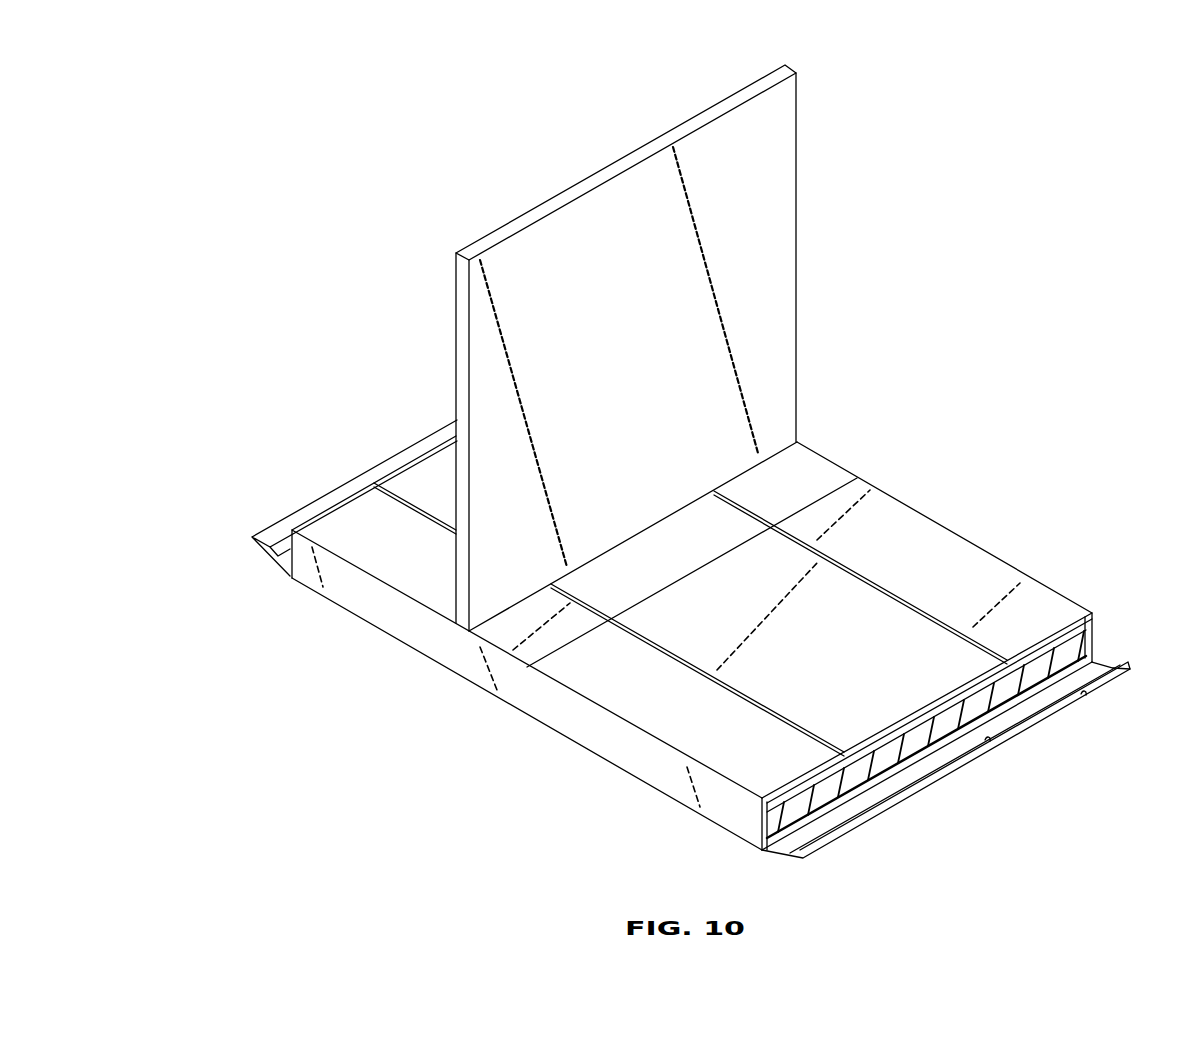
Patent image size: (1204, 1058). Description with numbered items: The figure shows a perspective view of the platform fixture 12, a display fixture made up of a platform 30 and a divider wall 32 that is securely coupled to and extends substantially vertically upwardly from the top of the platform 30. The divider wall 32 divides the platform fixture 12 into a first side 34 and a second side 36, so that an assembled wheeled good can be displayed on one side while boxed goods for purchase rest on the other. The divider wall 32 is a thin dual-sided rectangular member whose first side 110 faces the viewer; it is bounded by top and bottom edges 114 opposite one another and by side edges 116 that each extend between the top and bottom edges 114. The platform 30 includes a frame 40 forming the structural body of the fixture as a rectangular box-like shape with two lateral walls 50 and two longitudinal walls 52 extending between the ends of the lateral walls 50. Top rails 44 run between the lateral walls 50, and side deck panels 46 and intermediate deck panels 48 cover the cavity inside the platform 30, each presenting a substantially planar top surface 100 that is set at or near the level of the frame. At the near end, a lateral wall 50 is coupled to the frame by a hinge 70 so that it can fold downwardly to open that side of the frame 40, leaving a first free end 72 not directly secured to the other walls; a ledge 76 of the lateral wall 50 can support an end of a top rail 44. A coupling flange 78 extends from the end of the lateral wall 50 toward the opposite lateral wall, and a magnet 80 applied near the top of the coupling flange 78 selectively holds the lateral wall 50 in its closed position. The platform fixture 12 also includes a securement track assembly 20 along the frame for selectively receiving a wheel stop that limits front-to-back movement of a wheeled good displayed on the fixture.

The platform fixture 12 is at (356, 145).
The securement track assembly 20 is at (1010, 672).
The platform 30 is at (394, 626).
The divider wall 32 is at (764, 256).
The first side 34 is at (812, 469).
The second side 36 is at (401, 575).
The frame 40 is at (311, 518).
The top rail 44 is at (583, 608).
The side deck panel 46 is at (993, 575).
The intermediate deck panel 48 is at (435, 482).
The lateral wall 50 is at (1012, 745).
The longitudinal wall 52 is at (726, 809).
The hinge 70 is at (768, 856).
The first free end 72 is at (1120, 667).
The ledge 76 is at (1085, 693).
The coupling flange 78 is at (1022, 718).
The magnet 80 is at (838, 768).
The top surface 100 is at (890, 530).
The first side 110 is at (776, 330).
The top and bottom edges 114 is at (758, 85).
The side edges 116 is at (794, 138).